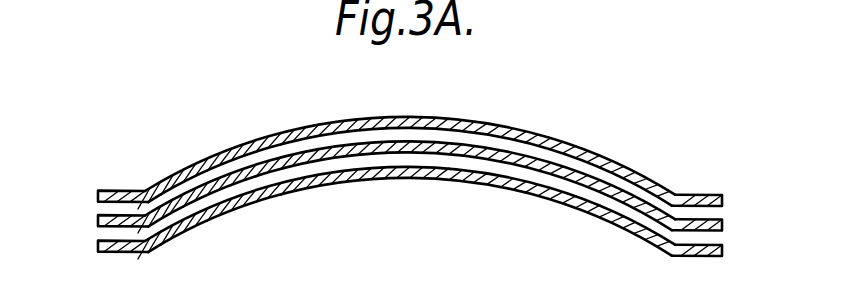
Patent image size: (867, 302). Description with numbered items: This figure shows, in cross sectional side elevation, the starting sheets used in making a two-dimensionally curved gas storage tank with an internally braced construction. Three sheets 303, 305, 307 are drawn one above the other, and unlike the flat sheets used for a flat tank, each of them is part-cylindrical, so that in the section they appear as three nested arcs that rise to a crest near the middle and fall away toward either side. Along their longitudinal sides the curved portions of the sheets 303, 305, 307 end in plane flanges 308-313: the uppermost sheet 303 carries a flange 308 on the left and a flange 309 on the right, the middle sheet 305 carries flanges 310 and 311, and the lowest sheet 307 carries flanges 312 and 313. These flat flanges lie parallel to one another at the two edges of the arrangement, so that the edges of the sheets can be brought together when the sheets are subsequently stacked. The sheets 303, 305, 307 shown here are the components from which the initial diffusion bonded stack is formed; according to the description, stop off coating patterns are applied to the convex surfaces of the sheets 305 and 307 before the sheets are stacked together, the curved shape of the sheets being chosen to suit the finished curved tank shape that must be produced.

The sheet 303 is at (413, 149).
The sheet 305 is at (411, 160).
The sheet 307 is at (413, 214).
The plane flange 308 is at (118, 191).
The plane flange 309 is at (708, 196).
The plane flange 310 is at (113, 215).
The plane flange 311 is at (702, 221).
The plane flange 312 is at (110, 239).
The plane flange 313 is at (702, 246).